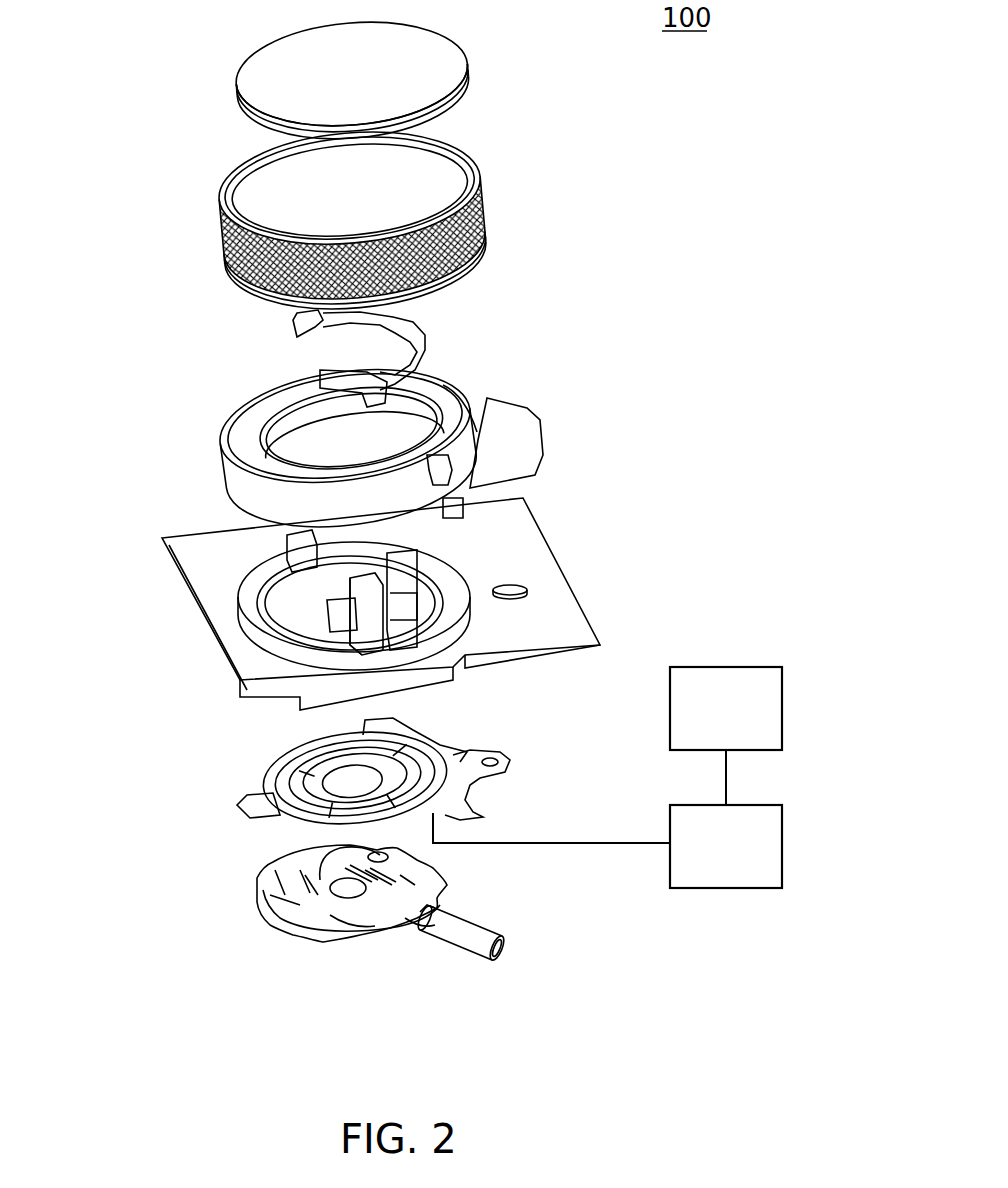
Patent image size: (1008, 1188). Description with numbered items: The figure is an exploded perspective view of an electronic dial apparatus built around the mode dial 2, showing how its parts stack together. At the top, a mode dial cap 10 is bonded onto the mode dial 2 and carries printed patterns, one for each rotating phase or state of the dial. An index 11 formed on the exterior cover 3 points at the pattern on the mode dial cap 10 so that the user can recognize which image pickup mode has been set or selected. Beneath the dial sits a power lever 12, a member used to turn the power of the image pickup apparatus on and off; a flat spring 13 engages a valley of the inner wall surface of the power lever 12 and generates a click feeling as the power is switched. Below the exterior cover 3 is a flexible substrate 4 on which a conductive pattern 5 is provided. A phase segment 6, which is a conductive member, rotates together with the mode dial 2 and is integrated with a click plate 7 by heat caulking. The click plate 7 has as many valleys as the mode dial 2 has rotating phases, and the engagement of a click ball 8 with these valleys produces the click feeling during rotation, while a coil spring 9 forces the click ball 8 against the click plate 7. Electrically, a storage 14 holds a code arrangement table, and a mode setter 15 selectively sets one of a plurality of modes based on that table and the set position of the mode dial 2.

The mode dial cap 10 is at (413, 80).
The mode dial 2 is at (453, 283).
The flat spring 13 is at (293, 323).
The power lever 12 is at (260, 475).
The exterior cover 3 is at (205, 563).
The index 11 is at (517, 590).
The flexible substrate 4 is at (457, 767).
The conductive pattern 5 is at (300, 758).
The phase segment 6 is at (260, 887).
The click plate 7 is at (367, 927).
The click ball 8 is at (423, 927).
The coil spring 9 is at (470, 927).
The storage 14 is at (775, 687).
The mode setter 15 is at (777, 825).